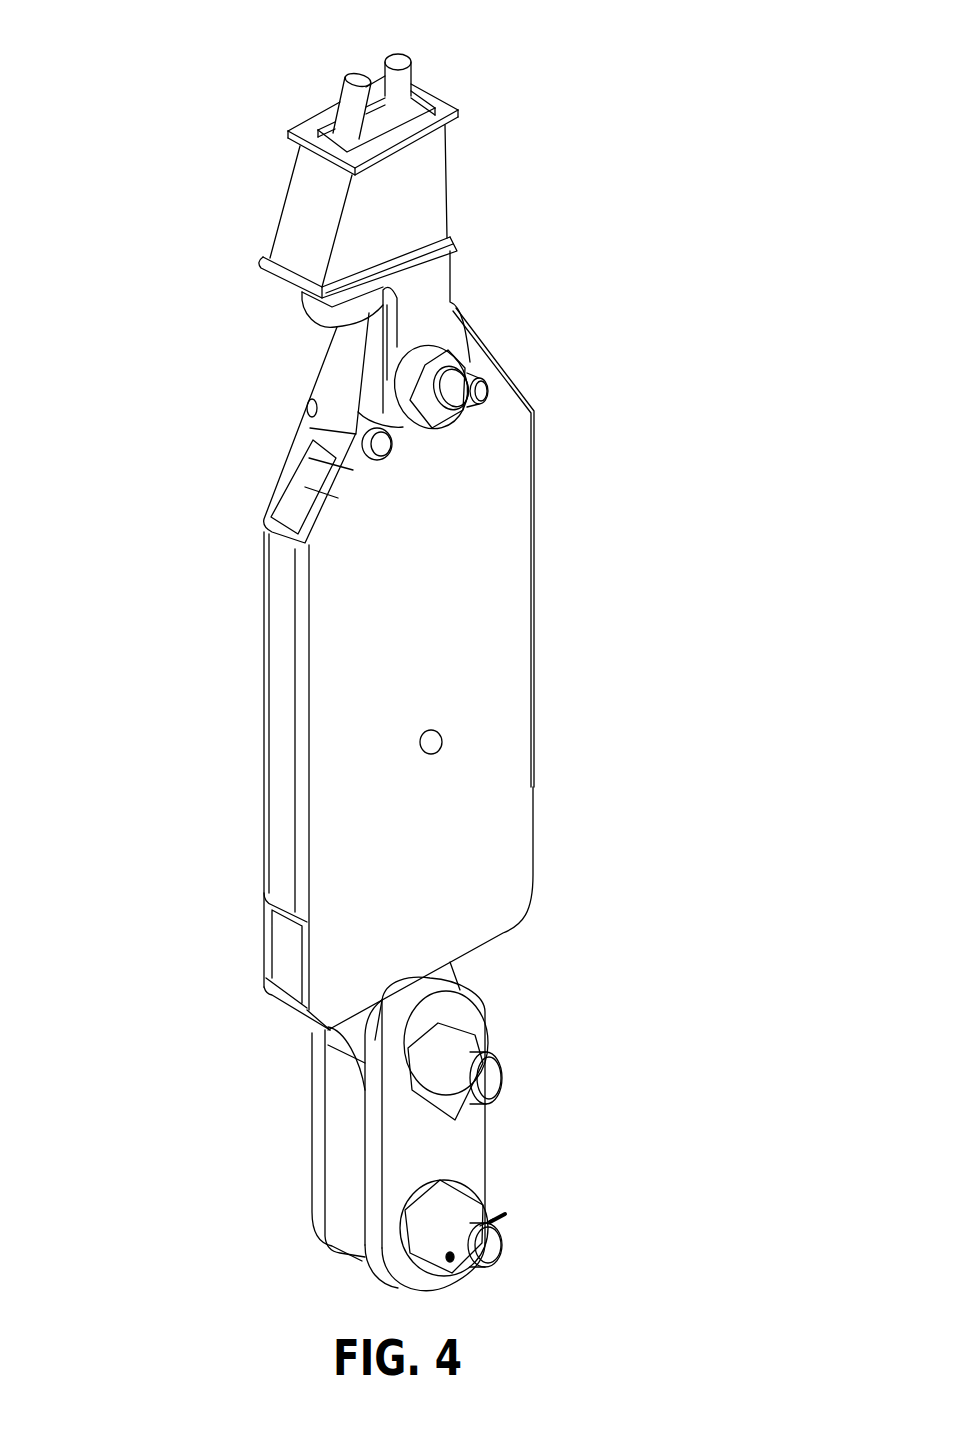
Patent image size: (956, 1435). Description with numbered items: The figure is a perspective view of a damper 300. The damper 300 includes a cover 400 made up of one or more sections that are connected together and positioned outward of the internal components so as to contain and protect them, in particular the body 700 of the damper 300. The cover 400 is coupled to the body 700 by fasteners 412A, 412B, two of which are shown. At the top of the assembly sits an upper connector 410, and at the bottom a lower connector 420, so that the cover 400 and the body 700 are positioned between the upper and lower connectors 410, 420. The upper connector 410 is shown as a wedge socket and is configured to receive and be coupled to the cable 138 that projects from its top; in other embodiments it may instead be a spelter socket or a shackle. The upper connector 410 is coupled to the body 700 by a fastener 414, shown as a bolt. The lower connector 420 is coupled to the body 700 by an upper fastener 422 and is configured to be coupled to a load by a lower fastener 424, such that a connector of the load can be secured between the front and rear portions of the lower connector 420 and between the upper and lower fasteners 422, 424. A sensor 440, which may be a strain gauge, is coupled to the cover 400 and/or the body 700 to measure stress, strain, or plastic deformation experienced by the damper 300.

The cable 138 is at (407, 80).
The damper 300 is at (140, 238).
The upper connector 410 is at (448, 178).
The body 700 is at (350, 379).
The fastener 412A is at (385, 453).
The fastener 412B is at (490, 397).
The fastener (bolt) 414 is at (451, 398).
The cover 400 is at (562, 563).
The sensor 440 is at (441, 737).
The lower connector 420 is at (486, 1158).
The fastener (bolt) 422 is at (503, 1080).
The fastener (bolt) 424 is at (493, 1253).